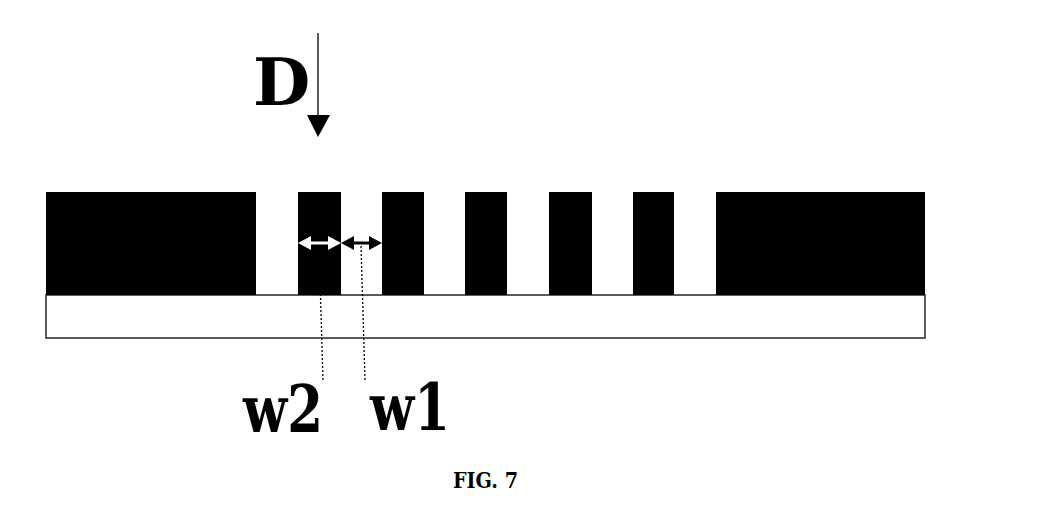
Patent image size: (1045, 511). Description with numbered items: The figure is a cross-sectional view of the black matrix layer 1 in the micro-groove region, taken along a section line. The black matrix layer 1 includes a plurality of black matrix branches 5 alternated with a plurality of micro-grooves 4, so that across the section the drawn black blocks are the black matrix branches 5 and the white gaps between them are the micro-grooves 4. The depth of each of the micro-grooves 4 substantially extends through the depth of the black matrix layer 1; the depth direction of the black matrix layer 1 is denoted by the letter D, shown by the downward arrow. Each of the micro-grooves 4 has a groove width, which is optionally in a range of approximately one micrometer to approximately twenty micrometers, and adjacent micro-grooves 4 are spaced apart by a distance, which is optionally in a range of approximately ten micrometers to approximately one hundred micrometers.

The black matrix layer 1 is at (485, 243).
The micro-grooves 4 is at (611, 233).
The black matrix branches 5 is at (486, 192).